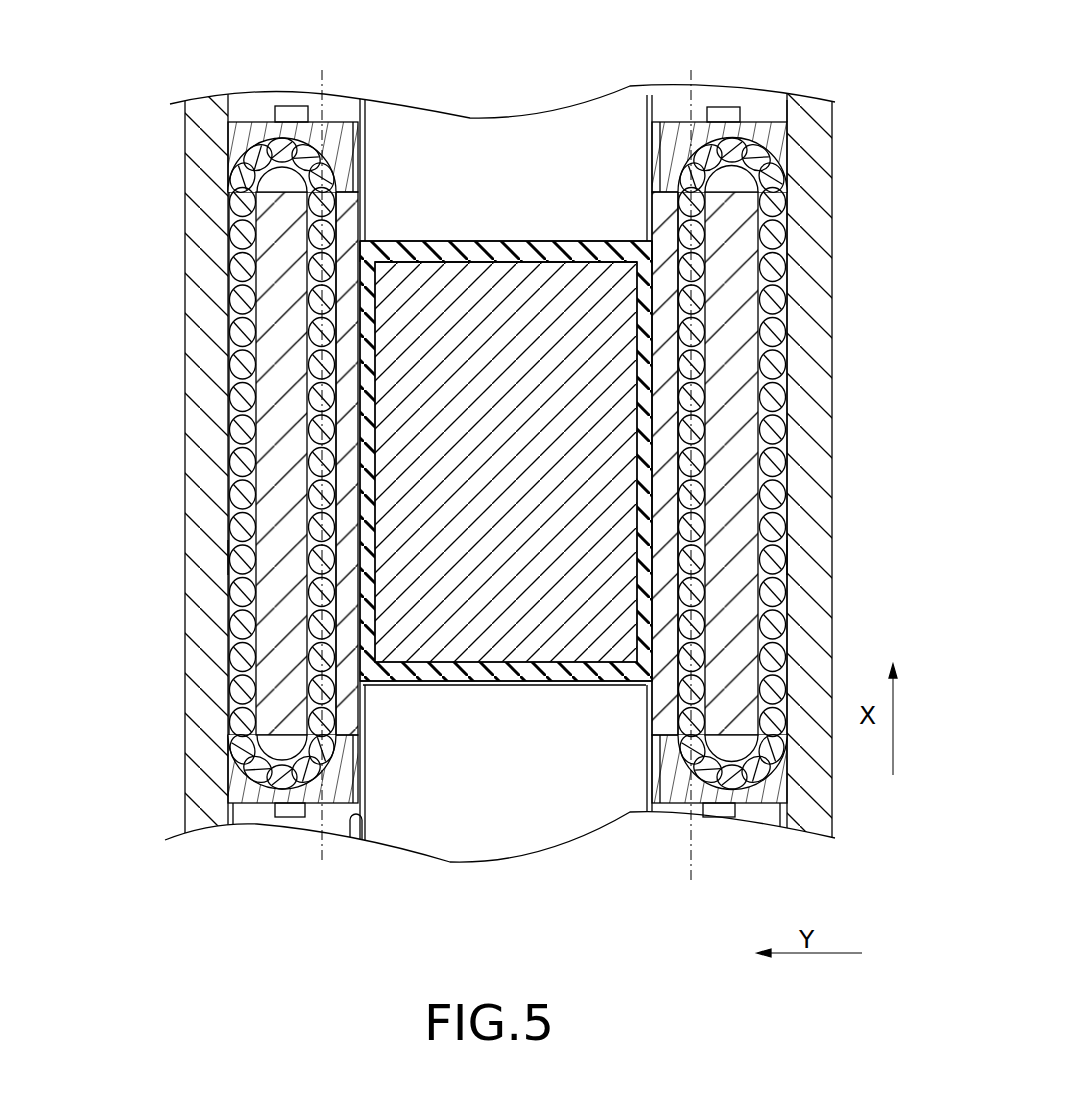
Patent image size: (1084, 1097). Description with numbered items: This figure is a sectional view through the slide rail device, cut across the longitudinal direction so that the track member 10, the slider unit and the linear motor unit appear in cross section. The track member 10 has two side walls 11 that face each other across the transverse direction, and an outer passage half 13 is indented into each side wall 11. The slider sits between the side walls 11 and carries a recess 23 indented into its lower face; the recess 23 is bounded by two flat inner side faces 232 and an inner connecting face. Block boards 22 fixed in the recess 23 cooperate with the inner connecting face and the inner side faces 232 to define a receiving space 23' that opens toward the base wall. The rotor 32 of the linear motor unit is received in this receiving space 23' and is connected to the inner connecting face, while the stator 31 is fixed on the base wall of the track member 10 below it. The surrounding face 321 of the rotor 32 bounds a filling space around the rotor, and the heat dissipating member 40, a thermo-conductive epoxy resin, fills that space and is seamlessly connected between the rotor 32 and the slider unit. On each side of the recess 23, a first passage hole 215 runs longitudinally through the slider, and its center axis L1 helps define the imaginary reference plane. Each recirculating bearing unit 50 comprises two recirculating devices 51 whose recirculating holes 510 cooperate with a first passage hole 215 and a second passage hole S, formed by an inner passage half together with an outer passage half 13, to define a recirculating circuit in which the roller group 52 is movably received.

The track member 10 is at (185, 138).
The side wall 11 is at (200, 243).
The outer passage half 13 is at (785, 113).
The block board 22 is at (385, 241).
The recess 23 is at (505, 505).
The receiving space 23' is at (506, 153).
The stator 31 is at (350, 843).
The rotor 32 is at (552, 290).
The heat dissipating member 40 is at (468, 243).
The recirculating bearing unit 50 is at (230, 433).
The recirculating device 51 is at (262, 122).
The roller group 52 is at (737, 405).
The first passage hole 215 is at (345, 190).
The inner side face 232 is at (355, 395).
The surrounding face 321 is at (622, 241).
The recirculating hole 510 is at (242, 160).
The second passage hole S is at (232, 557).
The center axis L1 is at (506, 491).